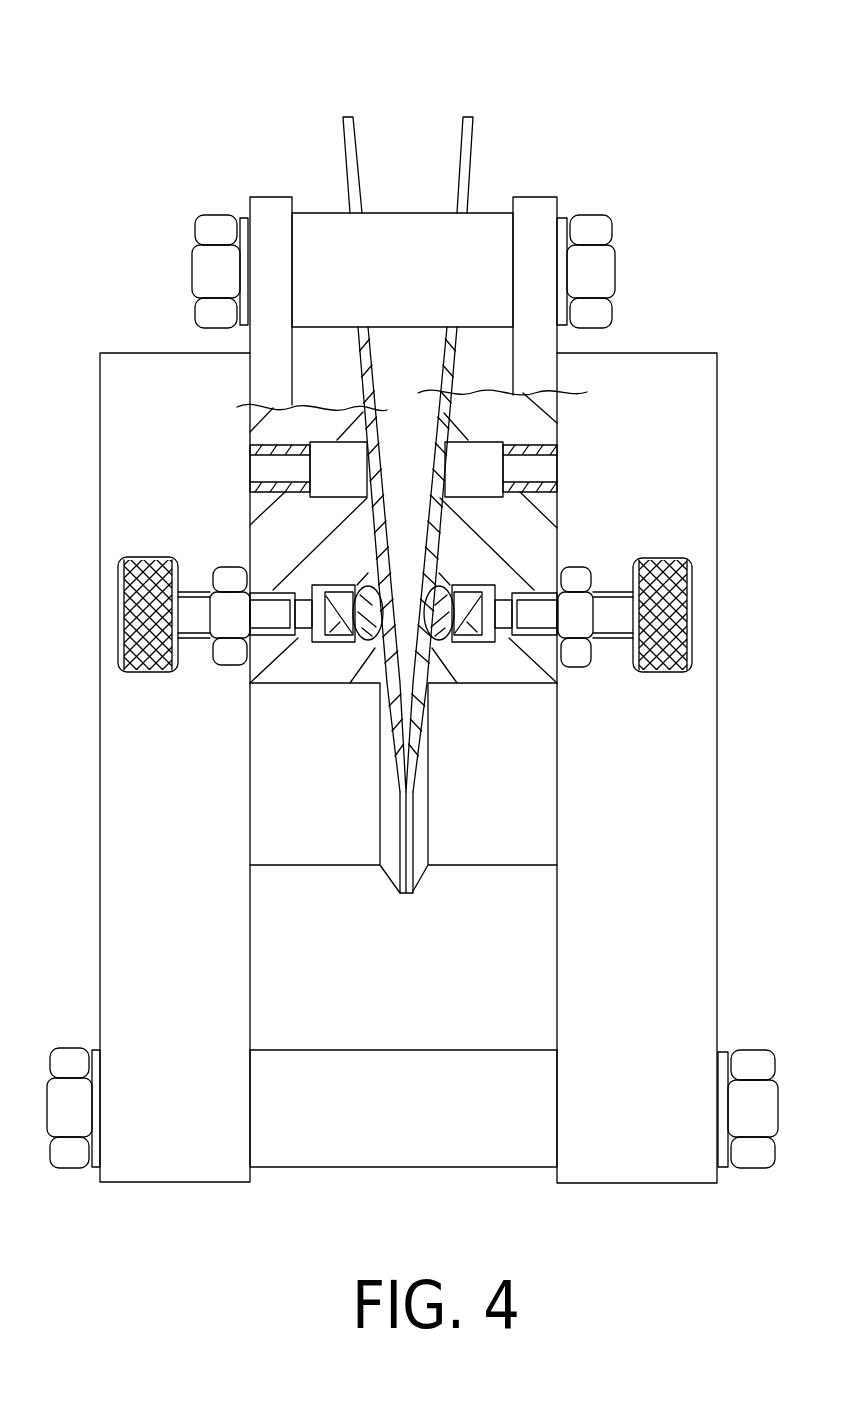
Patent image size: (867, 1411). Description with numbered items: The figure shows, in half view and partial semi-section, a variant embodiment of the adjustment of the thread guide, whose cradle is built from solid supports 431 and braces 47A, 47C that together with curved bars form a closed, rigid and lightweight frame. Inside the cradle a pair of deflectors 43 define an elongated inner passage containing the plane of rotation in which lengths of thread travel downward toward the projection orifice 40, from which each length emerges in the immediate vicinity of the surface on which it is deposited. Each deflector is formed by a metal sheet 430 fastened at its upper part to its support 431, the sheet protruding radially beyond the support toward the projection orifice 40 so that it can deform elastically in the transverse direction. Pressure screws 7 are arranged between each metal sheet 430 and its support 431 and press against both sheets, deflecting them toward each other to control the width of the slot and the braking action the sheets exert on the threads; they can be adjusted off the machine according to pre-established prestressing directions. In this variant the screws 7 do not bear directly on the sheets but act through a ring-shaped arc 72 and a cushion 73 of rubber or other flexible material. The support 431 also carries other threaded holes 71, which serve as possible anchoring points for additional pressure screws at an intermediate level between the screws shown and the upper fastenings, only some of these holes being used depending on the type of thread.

The deflectors 43 is at (374, 126).
The metal sheet 430 is at (340, 170).
The support 431 is at (333, 363).
The brace 47A is at (467, 248).
The brace 47C is at (497, 1145).
The threaded holes 71 is at (268, 472).
The pressure screws 7 is at (110, 600).
The ring-shaped arc 72 is at (328, 630).
The cushion 73 is at (365, 640).
The projection orifice 40 is at (391, 862).